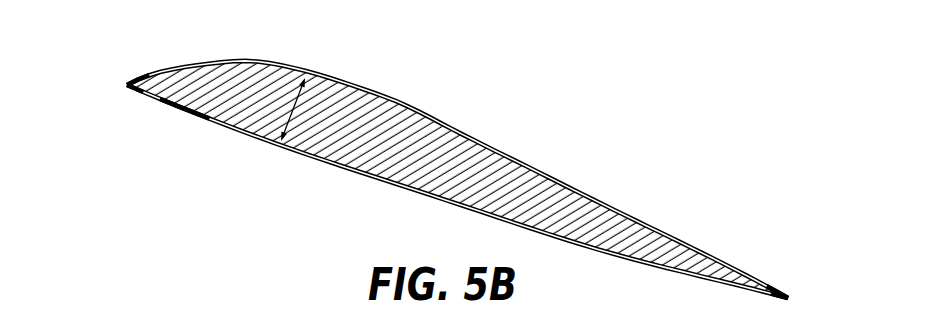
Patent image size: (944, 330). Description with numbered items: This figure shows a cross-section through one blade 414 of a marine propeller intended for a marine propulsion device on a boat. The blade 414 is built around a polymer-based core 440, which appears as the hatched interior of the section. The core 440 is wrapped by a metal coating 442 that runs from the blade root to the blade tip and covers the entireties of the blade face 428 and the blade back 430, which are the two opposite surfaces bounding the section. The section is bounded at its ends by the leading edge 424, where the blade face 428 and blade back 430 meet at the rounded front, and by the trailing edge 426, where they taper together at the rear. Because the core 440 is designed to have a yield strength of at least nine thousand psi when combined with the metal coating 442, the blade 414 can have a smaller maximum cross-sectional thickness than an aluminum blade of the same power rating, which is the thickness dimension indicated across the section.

The blade 414 is at (464, 158).
The leading edge 424 is at (127, 86).
The trailing edge 426 is at (790, 298).
The blade face 428 is at (393, 184).
The blade back 430 is at (398, 102).
The polymer-based core 440 is at (348, 142).
The metal coating 442 is at (187, 117).